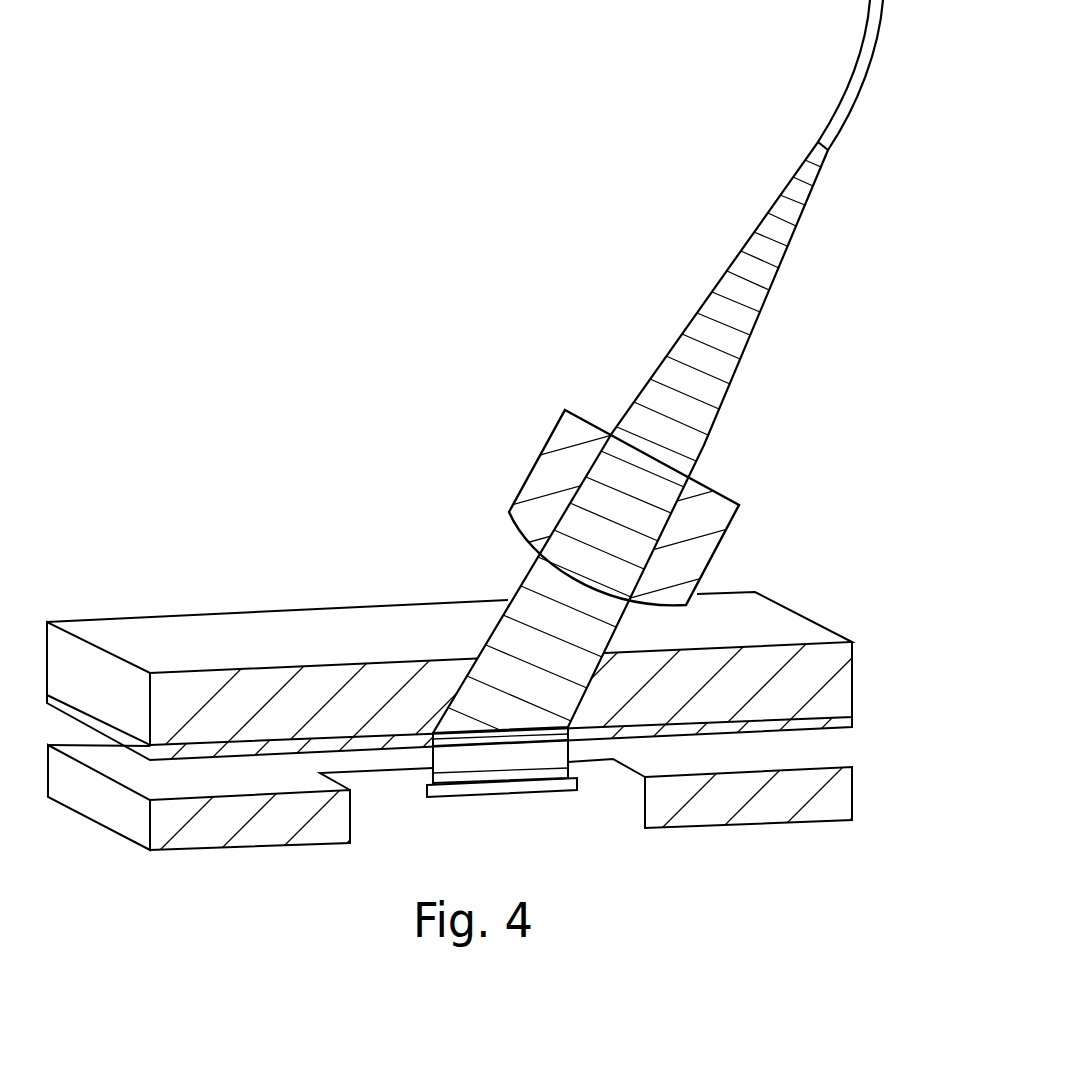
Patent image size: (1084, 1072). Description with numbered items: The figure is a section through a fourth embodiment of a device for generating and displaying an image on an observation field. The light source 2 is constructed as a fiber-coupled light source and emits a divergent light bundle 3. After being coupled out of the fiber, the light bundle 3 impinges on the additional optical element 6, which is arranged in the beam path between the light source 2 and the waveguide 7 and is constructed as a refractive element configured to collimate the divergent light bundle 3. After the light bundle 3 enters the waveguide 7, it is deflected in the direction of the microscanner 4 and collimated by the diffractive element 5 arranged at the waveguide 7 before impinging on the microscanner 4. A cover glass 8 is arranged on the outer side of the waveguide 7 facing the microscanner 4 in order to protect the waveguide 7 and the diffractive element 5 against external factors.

The light source 2 is at (853, 107).
The light bundle 3 is at (747, 342).
The microscanner 4 is at (577, 782).
The diffractive element 5 is at (567, 728).
The additional optical element 6 is at (718, 549).
The waveguide 7 is at (852, 667).
The cover glass 8 is at (852, 721).